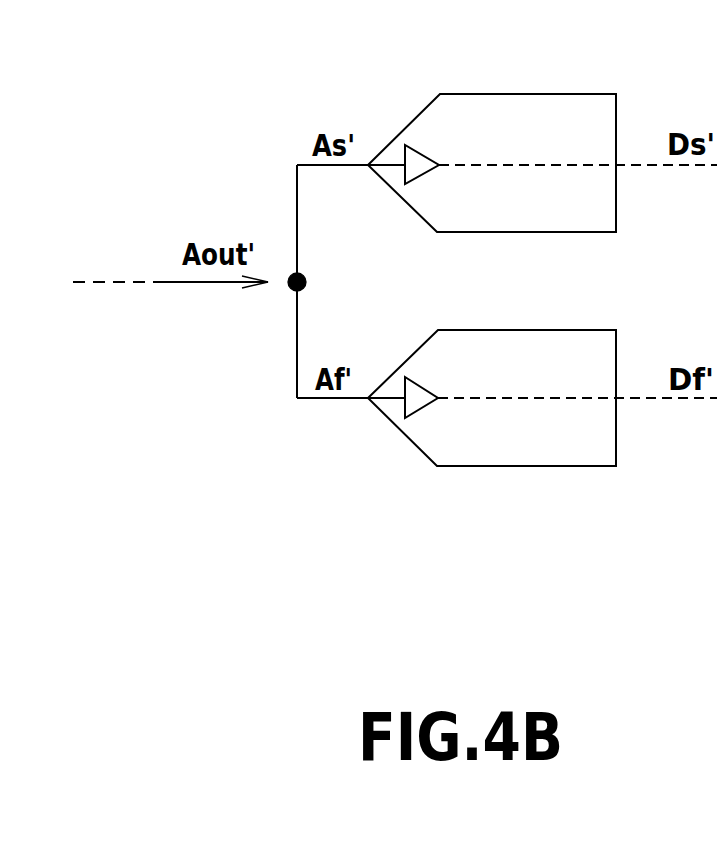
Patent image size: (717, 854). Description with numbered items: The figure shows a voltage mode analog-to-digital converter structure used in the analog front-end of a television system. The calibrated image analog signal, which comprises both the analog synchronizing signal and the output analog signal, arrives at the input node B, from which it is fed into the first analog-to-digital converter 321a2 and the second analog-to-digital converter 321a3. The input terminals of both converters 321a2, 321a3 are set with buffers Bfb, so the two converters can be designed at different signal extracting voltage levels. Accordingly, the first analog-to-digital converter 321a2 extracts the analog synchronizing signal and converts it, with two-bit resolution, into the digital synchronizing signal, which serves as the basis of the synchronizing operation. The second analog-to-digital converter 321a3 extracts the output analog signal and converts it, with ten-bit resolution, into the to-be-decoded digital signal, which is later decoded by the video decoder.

The first analog-to-digital converter 321a2 is at (528, 94).
The second analog-to-digital converter 321a3 is at (527, 330).
The input node B is at (288, 287).
The buffer Bfb is at (423, 155).